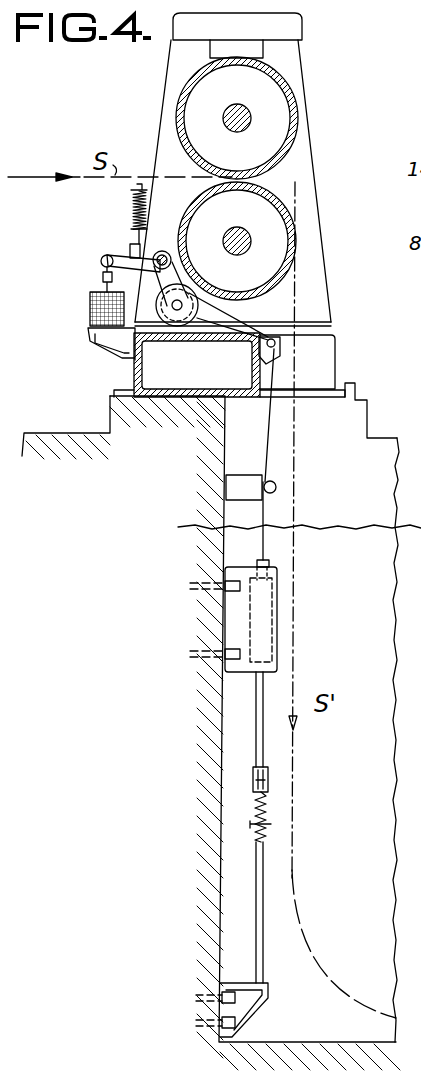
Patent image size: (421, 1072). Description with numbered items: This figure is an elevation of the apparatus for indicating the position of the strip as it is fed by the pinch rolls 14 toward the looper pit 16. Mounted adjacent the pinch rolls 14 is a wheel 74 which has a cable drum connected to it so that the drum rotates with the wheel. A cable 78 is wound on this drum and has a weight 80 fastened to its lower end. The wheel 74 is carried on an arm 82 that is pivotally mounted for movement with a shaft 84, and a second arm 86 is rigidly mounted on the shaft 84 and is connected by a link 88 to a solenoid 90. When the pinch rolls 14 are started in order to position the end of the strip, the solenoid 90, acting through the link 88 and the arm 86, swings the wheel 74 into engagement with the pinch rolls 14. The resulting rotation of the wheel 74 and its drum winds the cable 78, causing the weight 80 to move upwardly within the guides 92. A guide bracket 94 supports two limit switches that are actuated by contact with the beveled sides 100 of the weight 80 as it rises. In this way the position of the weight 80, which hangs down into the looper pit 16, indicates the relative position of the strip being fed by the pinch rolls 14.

The pinch rolls 14 is at (170, 146).
The looper pit 16 is at (378, 886).
The wheel 74 is at (172, 340).
The cable 78 is at (282, 362).
The weight 80 is at (268, 779).
The arm 82 is at (177, 278).
The shaft 84 is at (172, 255).
The arm 86 is at (136, 256).
The link 88 is at (103, 268).
The solenoid 90 is at (97, 305).
The guides 92 is at (258, 752).
The guide bracket 94 is at (238, 633).
The beveled sides 100 is at (268, 792).